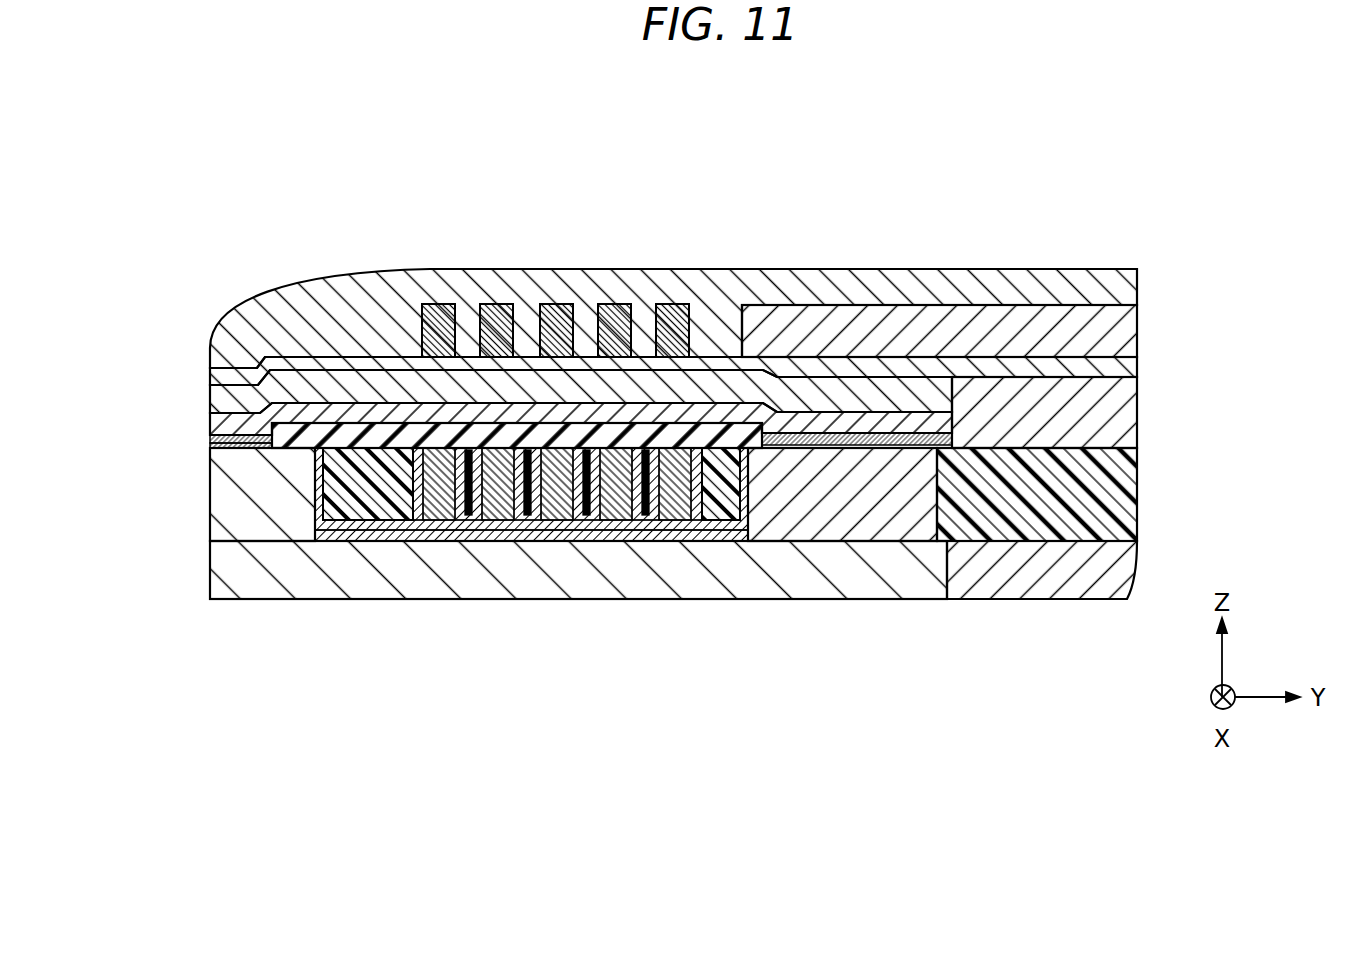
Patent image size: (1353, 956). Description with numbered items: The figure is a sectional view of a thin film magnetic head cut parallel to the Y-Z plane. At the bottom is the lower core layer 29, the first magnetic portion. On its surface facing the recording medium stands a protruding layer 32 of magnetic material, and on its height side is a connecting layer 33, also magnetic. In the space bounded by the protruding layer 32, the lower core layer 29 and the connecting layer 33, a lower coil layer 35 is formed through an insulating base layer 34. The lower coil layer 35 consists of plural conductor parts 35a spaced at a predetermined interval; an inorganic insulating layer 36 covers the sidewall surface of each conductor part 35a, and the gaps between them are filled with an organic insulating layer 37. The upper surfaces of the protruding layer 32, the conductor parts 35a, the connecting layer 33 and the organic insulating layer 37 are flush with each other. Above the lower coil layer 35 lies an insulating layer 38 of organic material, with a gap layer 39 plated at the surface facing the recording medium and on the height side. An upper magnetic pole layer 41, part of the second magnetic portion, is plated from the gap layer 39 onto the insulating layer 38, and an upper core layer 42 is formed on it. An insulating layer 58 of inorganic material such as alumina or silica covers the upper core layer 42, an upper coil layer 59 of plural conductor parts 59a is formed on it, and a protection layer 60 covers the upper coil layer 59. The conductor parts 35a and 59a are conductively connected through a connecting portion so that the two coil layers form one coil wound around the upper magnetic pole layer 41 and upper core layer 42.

The lower core layer 29 is at (210, 578).
The protruding layer 32 is at (210, 518).
The connecting layer 33 is at (925, 512).
The insulating base layer 34 is at (712, 535).
The lower coil layer 35 is at (565, 609).
The conductor part 35a is at (715, 693).
The inorganic insulating layer 36 is at (402, 528).
The organic insulating layer 37 is at (348, 505).
The insulating layer 38 is at (210, 443).
The gap layer 39 is at (210, 437).
The upper magnetic pole layer 41 is at (210, 427).
The upper core layer 42 is at (210, 398).
The insulating layer 58 is at (312, 362).
The upper coil layer 59 is at (565, 226).
The conductor part 59a is at (436, 333).
The protection layer 60 is at (889, 287).